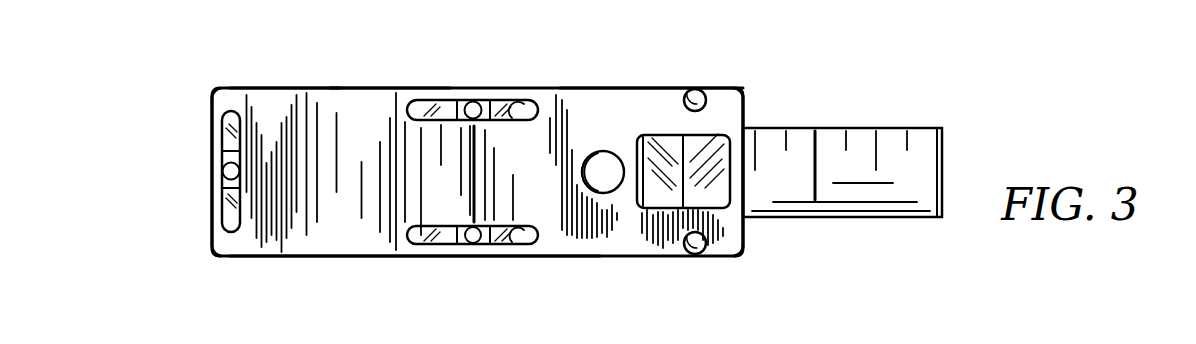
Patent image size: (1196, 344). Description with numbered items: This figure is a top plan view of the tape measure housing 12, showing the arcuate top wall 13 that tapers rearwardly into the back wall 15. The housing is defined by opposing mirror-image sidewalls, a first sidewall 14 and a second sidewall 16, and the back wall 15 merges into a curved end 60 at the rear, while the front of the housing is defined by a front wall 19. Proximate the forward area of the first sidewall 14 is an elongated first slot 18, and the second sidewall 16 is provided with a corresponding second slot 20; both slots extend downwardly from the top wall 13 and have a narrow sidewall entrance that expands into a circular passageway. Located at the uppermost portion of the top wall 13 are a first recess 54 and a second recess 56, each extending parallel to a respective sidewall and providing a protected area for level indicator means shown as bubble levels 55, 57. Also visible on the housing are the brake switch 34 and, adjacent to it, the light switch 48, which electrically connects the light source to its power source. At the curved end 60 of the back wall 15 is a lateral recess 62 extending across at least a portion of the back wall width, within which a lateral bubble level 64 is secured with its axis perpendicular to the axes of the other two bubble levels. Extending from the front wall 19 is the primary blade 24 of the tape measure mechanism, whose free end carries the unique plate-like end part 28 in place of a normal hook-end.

The housing 12 is at (365, 343).
The top wall 13 is at (635, 107).
The first sidewall 14 is at (273, 256).
The back wall 15 is at (279, 102).
The second sidewall 16 is at (362, 88).
The first slot 18 is at (695, 255).
The front wall 19 is at (746, 116).
The second slot 20 is at (693, 100).
The primary blade 24 is at (888, 135).
The end part 28 is at (944, 148).
The brake switch 34 is at (640, 200).
The light switch 48 is at (602, 157).
The first recess 54 is at (520, 244).
The bubble level 55 is at (471, 244).
The second recess 56 is at (518, 105).
The bubble level 57 is at (471, 101).
The curved end 60 is at (212, 116).
The lateral recess 62 is at (233, 215).
The lateral bubble level 64 is at (229, 172).